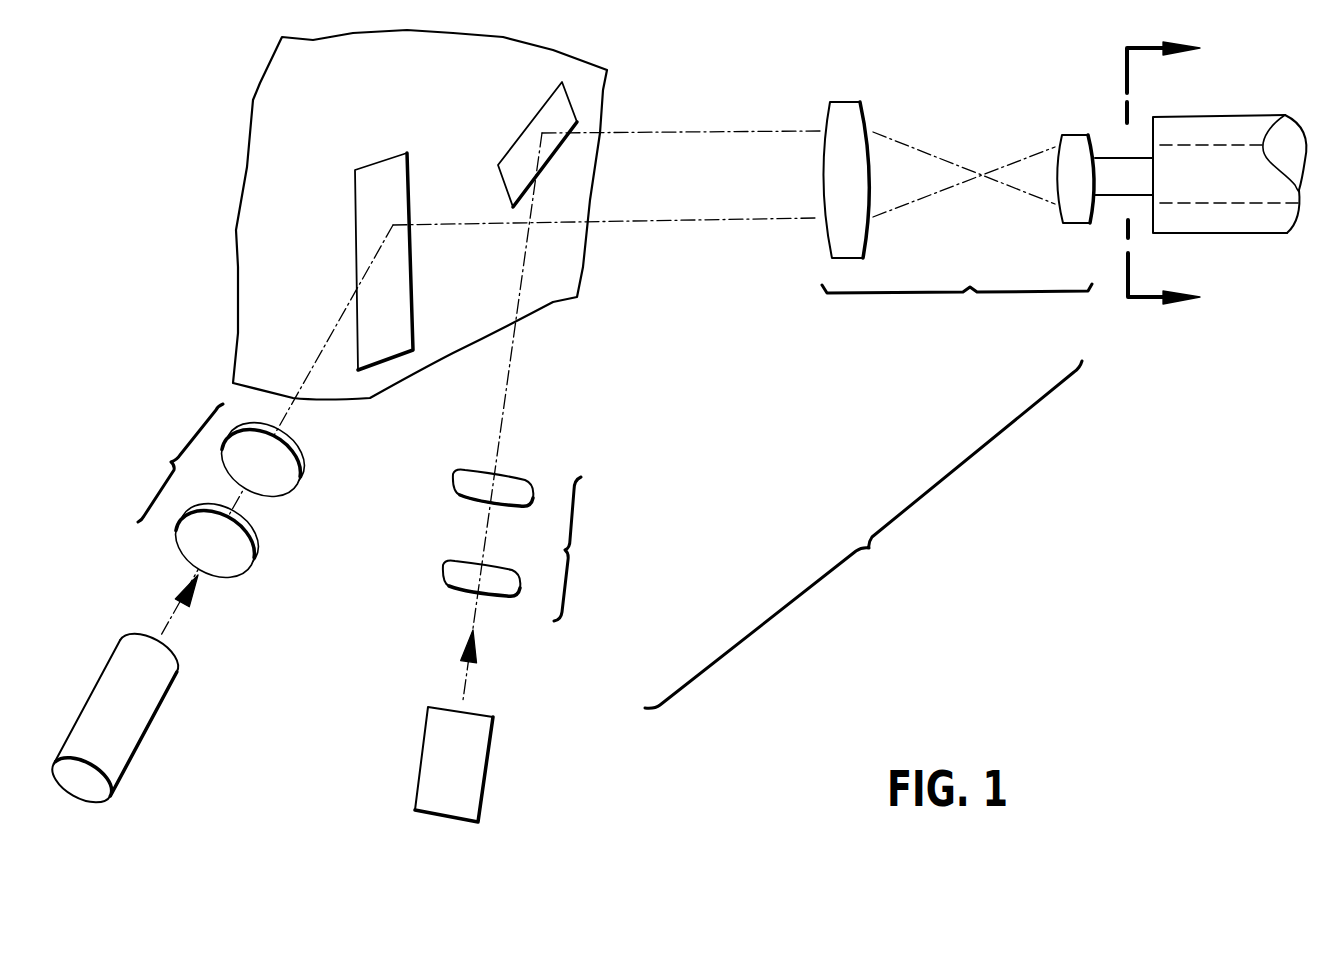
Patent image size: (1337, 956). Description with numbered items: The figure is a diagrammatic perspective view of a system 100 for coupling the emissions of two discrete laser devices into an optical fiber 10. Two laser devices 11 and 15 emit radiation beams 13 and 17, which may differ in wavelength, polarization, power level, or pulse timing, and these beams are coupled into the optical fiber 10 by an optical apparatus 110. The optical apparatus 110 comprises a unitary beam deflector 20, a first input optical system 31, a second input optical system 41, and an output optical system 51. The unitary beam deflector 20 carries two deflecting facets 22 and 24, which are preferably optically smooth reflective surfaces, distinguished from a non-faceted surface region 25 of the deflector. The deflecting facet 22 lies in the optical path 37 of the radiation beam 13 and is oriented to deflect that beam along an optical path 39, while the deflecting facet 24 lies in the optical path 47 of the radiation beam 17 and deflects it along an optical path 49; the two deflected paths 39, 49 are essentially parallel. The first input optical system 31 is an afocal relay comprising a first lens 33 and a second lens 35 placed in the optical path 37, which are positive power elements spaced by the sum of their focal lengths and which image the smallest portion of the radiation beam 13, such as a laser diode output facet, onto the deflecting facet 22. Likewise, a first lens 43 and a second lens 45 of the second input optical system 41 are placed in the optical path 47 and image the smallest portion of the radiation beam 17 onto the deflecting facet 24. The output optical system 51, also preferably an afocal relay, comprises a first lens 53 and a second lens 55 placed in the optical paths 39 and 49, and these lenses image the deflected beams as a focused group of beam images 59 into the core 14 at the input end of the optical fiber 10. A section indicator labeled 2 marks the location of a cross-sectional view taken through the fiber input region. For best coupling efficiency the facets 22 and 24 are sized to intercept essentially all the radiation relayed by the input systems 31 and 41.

The optical fiber 10 is at (1200, 233).
The laser device 11 is at (170, 695).
The radiation beam 13 is at (192, 603).
The core 14 is at (1202, 145).
The laser device 15 is at (423, 750).
The radiation beam 17 is at (465, 652).
The unitary beam deflector 20 is at (233, 228).
The deflecting facet 22 is at (400, 323).
The deflecting facet 24 is at (563, 115).
The non-faceted surface region 25 is at (513, 55).
The first input optical system 31 is at (180, 463).
The first lens 33 is at (257, 545).
The second lens 35 is at (303, 475).
The optical path 37 is at (287, 408).
The optical path 39 is at (628, 222).
The second input optical system 41 is at (587, 549).
The first lens 43 is at (443, 577).
The second lens 45 is at (453, 488).
The optical path 47 is at (503, 437).
The optical path 49 is at (693, 130).
The output optical system 51 is at (957, 305).
The first lens 53 is at (845, 102).
The second lens 55 is at (1072, 135).
The focused group of beam images 59 is at (1108, 198).
The section line 2- 2 is at (1173, 174).
The system 100 is at (1067, 562).
The optical apparatus 110 is at (863, 534).